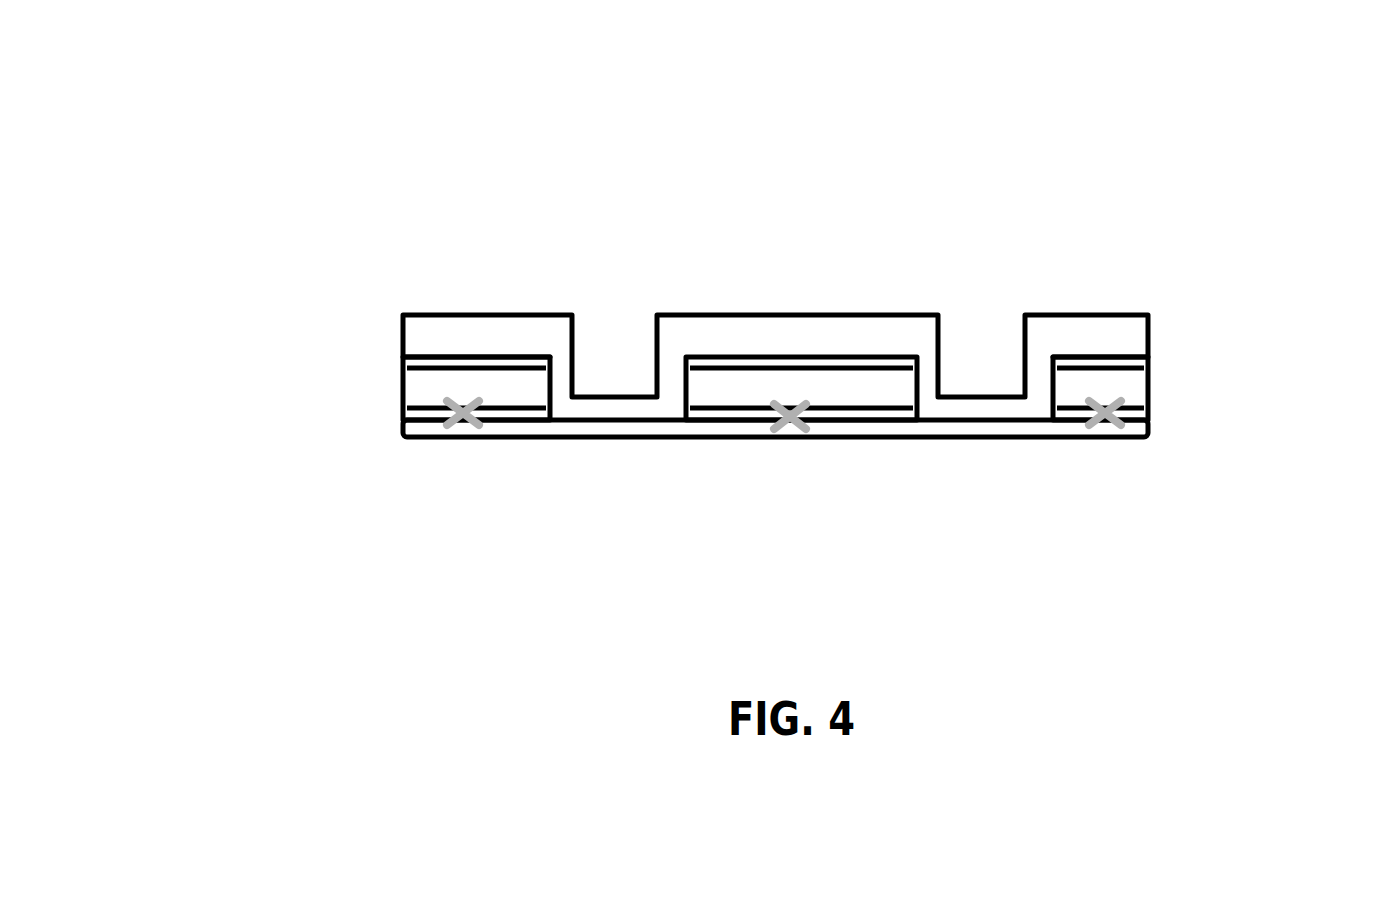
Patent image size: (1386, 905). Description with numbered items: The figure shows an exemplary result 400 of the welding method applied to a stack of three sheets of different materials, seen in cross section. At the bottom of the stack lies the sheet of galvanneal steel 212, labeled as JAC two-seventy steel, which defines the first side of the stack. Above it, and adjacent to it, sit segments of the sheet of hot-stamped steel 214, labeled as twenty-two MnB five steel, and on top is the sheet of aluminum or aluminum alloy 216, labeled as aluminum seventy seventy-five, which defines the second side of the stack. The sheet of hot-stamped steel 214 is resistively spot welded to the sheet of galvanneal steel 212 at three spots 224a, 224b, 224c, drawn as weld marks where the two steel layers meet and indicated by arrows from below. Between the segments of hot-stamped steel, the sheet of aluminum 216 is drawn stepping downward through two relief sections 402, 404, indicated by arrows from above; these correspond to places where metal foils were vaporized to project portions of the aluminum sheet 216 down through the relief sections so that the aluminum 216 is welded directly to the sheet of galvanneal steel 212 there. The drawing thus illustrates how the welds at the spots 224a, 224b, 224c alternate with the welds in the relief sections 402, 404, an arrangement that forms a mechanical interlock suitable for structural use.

The exemplary result 400 is at (326, 101).
The sheet of aluminum or aluminum alloy 216 is at (1320, 344).
The sheet of hot-stamped steel 214 is at (1295, 396).
The sheet of galvanneal steel 212 is at (1292, 447).
The relief section 402 is at (613, 391).
The relief section 404 is at (979, 391).
The spot 224a is at (463, 412).
The spot 224b is at (789, 418).
The spot 224c is at (1105, 415).